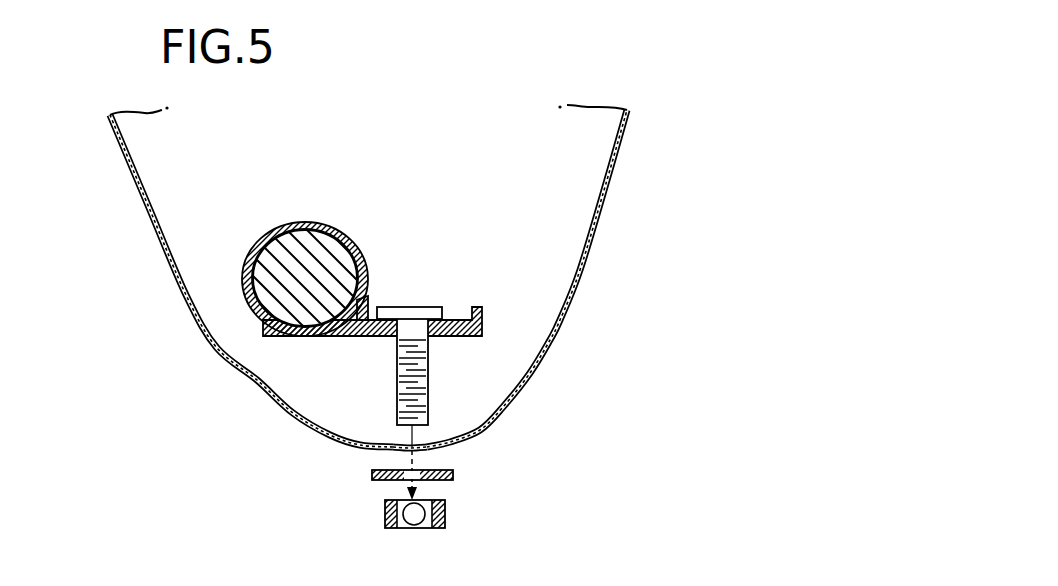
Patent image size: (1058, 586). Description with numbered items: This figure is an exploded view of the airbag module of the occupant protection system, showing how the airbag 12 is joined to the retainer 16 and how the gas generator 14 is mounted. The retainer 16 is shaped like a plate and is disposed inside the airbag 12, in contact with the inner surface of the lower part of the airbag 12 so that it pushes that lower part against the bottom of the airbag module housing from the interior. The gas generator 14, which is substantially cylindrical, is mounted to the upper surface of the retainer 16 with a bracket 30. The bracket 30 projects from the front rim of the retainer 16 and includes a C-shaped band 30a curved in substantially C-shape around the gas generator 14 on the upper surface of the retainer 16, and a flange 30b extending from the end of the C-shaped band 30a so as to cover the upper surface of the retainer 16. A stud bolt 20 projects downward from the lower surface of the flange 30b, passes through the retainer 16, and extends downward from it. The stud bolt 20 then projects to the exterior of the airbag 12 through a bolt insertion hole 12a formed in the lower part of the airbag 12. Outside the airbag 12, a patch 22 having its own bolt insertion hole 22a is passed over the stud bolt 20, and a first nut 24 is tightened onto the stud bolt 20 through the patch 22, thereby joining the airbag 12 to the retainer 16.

The airbag 12 is at (476, 282).
The bolt insertion hole 12a is at (423, 446).
The gas generator 14 is at (295, 302).
The retainer 16 is at (534, 241).
The stud bolt 20 is at (425, 372).
The patch 22 is at (462, 484).
The bolt insertion hole of patch 22a is at (400, 470).
The first nut 24 is at (443, 517).
The bracket 30 is at (339, 241).
The C-shaped band 30a is at (300, 228).
The flange 30b is at (382, 255).